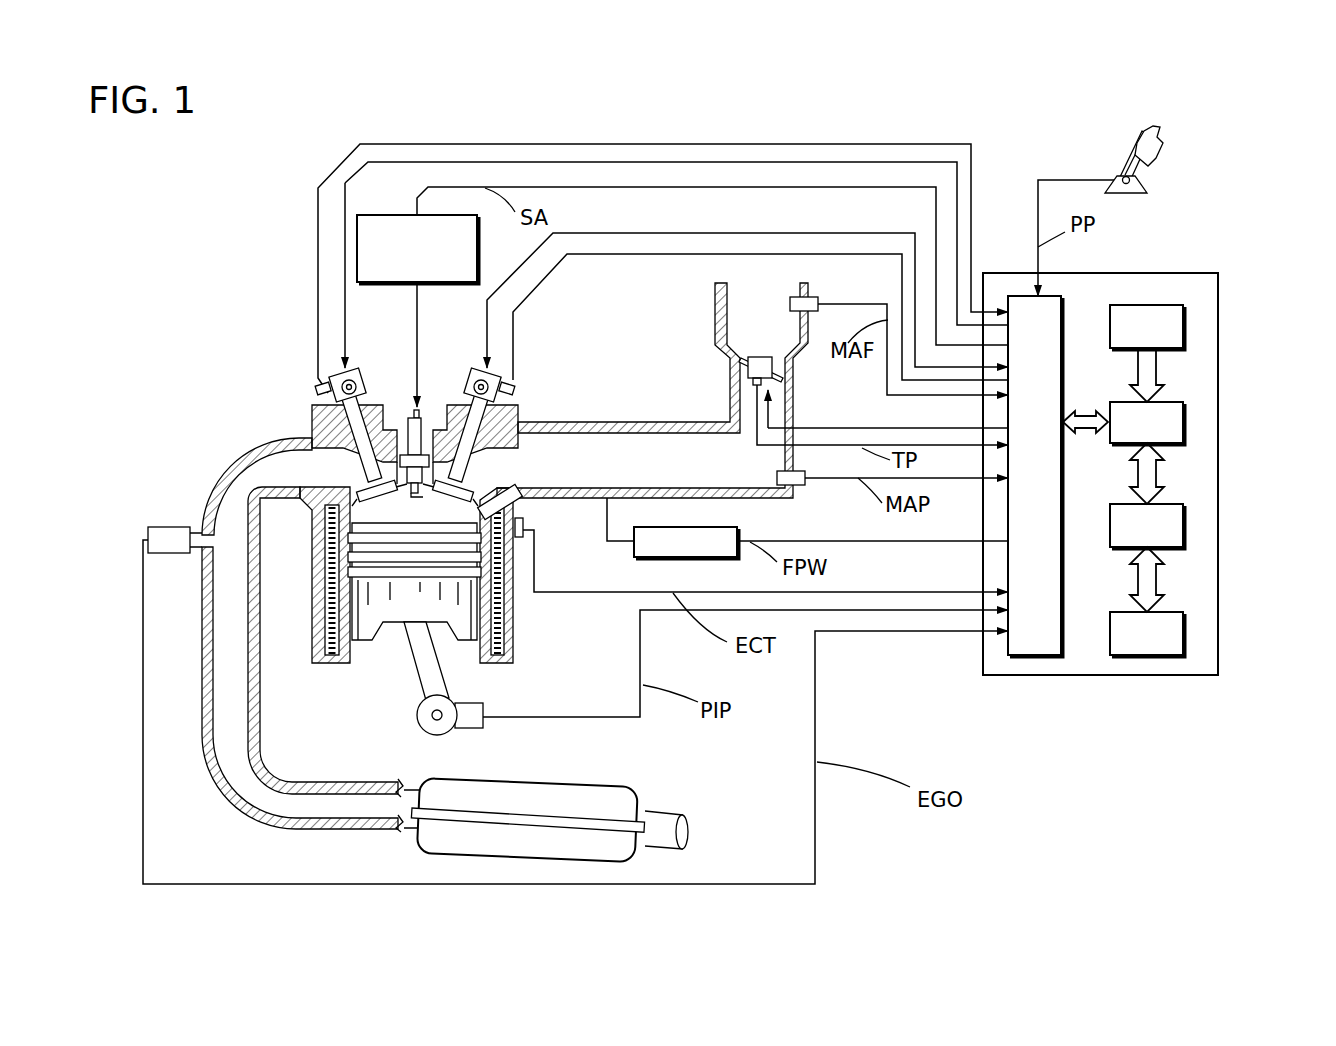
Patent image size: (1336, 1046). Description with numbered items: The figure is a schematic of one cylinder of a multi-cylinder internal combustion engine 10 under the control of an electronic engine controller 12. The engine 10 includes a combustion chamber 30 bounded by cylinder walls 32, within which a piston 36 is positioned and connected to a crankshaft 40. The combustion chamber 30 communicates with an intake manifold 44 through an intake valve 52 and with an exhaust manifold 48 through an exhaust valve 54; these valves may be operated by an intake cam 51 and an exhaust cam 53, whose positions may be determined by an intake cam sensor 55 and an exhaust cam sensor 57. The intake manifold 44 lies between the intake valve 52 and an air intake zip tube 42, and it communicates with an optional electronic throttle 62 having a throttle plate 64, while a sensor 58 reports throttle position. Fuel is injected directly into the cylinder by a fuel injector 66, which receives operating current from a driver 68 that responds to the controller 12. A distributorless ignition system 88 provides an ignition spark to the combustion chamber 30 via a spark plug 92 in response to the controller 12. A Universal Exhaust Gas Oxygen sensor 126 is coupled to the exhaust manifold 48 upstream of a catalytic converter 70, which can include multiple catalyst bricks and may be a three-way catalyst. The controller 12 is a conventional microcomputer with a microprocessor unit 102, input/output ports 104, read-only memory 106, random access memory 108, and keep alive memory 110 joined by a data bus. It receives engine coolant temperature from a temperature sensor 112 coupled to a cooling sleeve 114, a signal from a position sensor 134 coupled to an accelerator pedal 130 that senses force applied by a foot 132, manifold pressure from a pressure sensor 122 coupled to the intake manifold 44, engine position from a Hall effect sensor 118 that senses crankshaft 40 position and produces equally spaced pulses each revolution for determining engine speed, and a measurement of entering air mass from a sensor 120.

The internal combustion engine 10 is at (245, 356).
The electronic engine controller 12 is at (1207, 272).
The combustion chamber 30 is at (413, 507).
The cylinder walls 32 is at (358, 653).
The piston 36 is at (397, 608).
The crankshaft 40 is at (425, 735).
The air intake zip tube 42 is at (774, 334).
The intake manifold 44 is at (708, 476).
The exhaust manifold 48 is at (293, 481).
The intake cam 51 is at (470, 370).
The intake valve 52 is at (470, 470).
The exhaust cam 53 is at (355, 373).
The exhaust valve 54 is at (365, 478).
The intake cam sensor 55 is at (500, 395).
The exhaust cam sensor 57 is at (328, 392).
The throttle position sensor 58 is at (733, 397).
The electronic throttle 62 is at (775, 363).
The throttle plate 64 is at (748, 358).
The fuel injector 66 is at (523, 495).
The driver 68 is at (663, 557).
The catalytic converter 70 is at (597, 785).
The distributorless ignition system 88 is at (362, 212).
The spark plug 92 is at (420, 412).
The microprocessor unit 102 is at (1183, 412).
The input/output ports 104 is at (1063, 303).
The read-only memory 106 is at (1183, 322).
The random access memory 108 is at (1183, 525).
The keep alive memory 110 is at (1183, 630).
The temperature sensor 112 is at (535, 538).
The cooling sleeve 114 is at (497, 612).
The Hall effect sensor 118 is at (473, 732).
The air mass sensor 120 is at (810, 295).
The pressure sensor 122 is at (800, 487).
The Universal Exhaust Gas Oxygen sensor 126 is at (149, 526).
The accelerator pedal 130 is at (1165, 160).
The foot 132 is at (1153, 143).
The position sensor 134 is at (1140, 180).